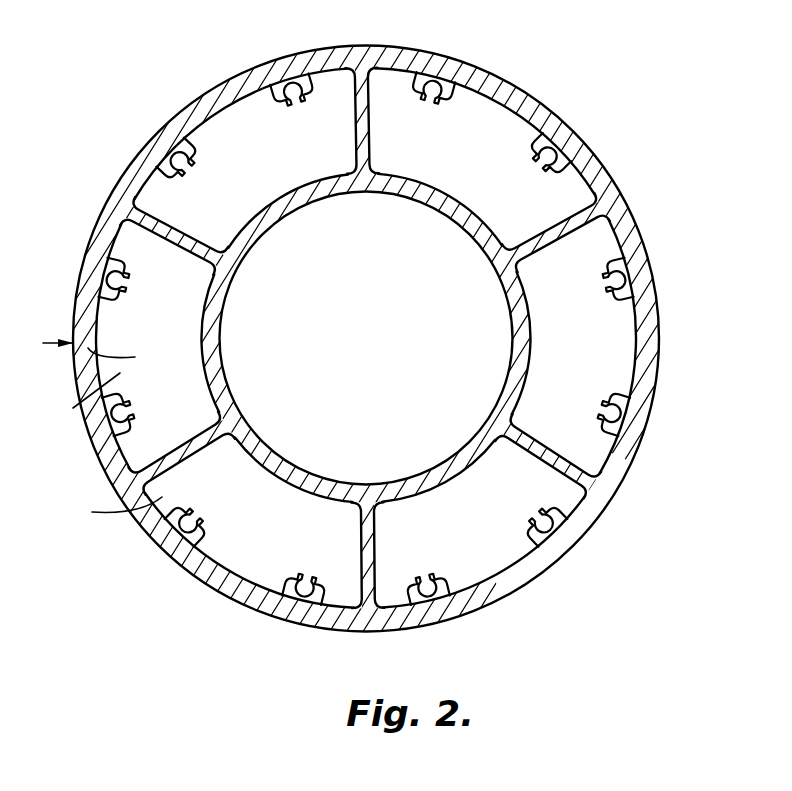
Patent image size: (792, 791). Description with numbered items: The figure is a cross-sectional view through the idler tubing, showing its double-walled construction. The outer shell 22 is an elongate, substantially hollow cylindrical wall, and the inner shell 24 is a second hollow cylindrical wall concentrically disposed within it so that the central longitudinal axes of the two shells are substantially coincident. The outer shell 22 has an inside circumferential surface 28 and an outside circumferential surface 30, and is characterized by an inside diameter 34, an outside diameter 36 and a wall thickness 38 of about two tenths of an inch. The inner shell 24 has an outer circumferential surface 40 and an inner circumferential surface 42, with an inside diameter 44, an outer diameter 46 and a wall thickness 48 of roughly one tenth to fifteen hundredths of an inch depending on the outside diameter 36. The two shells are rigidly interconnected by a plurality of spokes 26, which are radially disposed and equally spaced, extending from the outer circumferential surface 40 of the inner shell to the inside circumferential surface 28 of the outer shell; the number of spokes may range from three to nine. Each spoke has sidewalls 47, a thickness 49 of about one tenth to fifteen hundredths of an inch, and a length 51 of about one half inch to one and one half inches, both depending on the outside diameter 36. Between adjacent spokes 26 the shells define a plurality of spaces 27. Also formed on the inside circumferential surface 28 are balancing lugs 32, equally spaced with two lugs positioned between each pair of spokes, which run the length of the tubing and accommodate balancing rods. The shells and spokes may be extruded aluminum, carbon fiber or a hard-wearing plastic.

The outer shell 22 is at (218, 590).
The inner shell 24 is at (215, 342).
The spokes 26 is at (196, 228).
The spaces 27 is at (285, 640).
The inside circumferential surface 28 is at (262, 598).
The outside circumferential surface 30 is at (172, 562).
The balancing lugs 32 is at (142, 264).
The inside diameter 34 is at (407, 63).
The outside diameter 36 is at (410, 45).
The wall thickness 38 is at (99, 345).
The outer circumferential surface 40 is at (232, 399).
The inner circumferential surface 42 is at (237, 272).
The inside diameter 44 is at (366, 192).
The outer diameter 46 is at (408, 175).
The sidewalls 47 is at (153, 458).
The wall thickness 48 is at (457, 258).
The thickness 49 is at (317, 546).
The length 51 is at (97, 320).